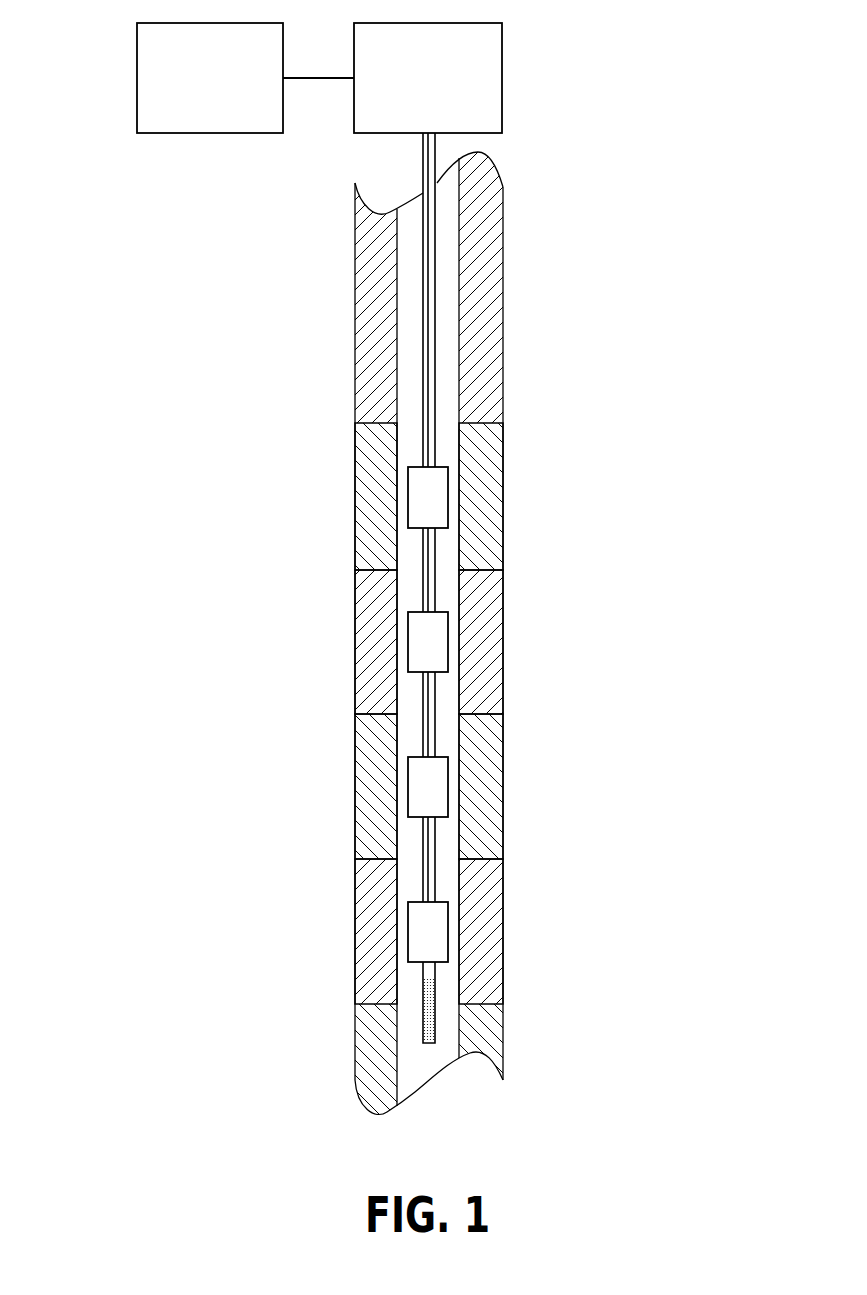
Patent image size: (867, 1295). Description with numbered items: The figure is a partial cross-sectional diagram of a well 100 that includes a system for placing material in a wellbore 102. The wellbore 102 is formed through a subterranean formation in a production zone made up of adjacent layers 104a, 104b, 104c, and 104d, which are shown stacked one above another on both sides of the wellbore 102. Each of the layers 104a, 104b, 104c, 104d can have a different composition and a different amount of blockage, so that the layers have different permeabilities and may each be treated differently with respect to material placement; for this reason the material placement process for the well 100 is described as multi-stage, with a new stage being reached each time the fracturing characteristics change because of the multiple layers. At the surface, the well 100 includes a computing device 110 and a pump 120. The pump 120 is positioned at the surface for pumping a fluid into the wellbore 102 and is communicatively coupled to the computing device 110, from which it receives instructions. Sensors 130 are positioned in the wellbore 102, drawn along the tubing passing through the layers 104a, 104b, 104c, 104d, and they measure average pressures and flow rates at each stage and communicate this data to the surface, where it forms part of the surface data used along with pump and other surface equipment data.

The well 100 is at (635, 145).
The wellbore 102 is at (410, 215).
The layer 104a is at (367, 465).
The layer 104b is at (367, 612).
The layer 104c is at (367, 757).
The layer 104d is at (367, 902).
The computing device 110 is at (137, 80).
The pump 120 is at (503, 78).
The sensors 130 is at (435, 497).